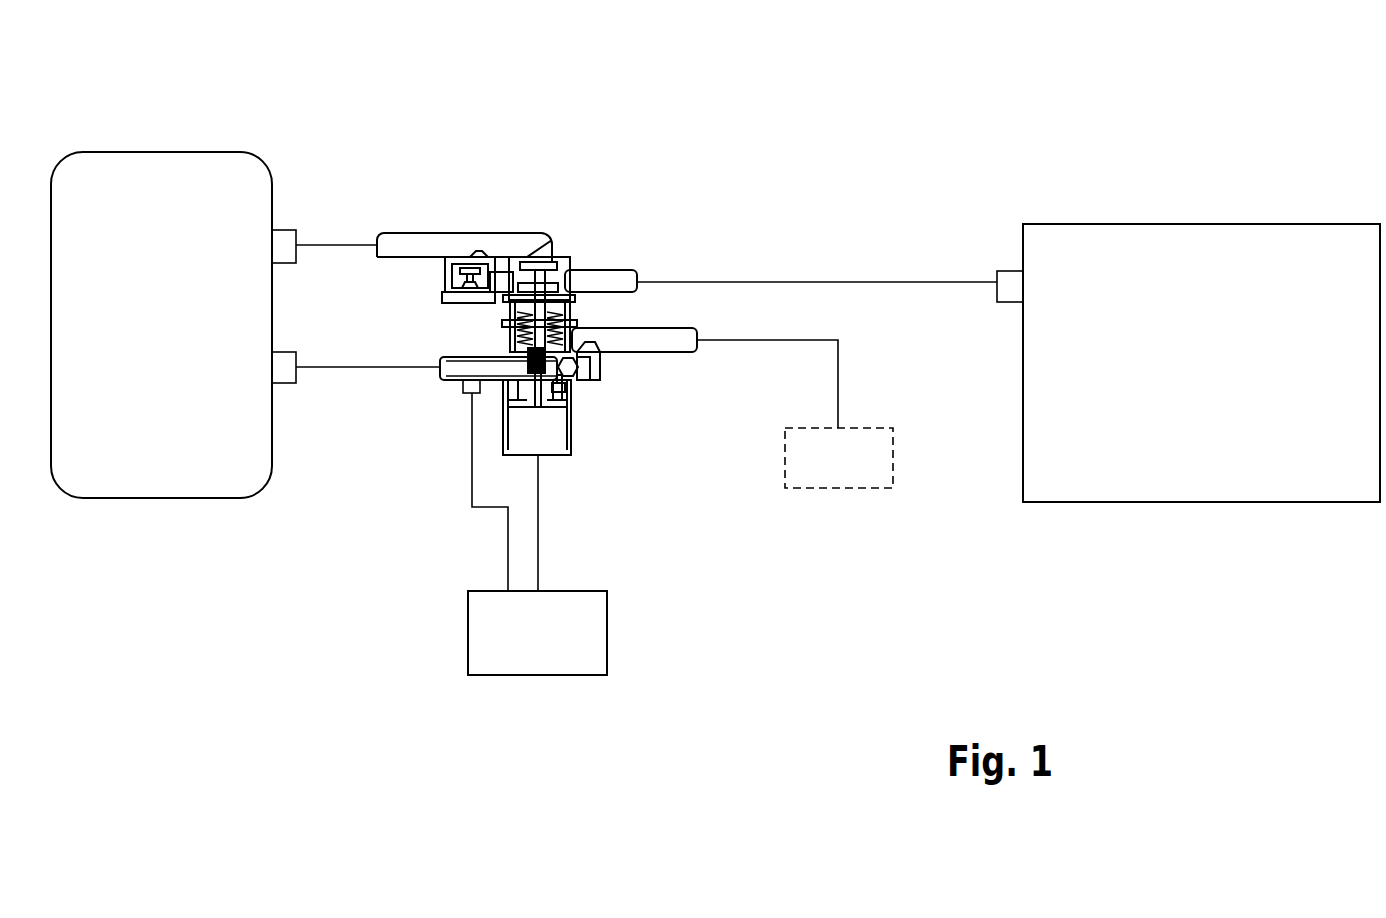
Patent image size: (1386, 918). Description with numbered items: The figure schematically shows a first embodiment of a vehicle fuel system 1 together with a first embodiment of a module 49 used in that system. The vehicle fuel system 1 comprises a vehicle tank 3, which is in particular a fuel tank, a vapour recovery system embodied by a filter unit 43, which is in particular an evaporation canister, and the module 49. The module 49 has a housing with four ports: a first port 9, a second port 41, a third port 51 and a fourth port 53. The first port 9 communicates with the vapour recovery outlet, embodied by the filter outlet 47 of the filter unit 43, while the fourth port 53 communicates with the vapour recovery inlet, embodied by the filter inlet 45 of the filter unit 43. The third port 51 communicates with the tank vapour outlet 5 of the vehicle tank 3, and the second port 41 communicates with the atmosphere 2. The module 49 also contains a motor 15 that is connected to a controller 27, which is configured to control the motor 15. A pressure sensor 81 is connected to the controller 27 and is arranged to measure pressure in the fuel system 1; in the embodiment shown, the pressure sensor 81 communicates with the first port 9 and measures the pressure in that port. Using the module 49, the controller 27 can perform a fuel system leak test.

The vehicle fuel system 1 is at (829, 197).
The atmosphere 2 is at (853, 452).
The vehicle tank 3 is at (1168, 317).
The tank vapour outlet 5 is at (1010, 282).
The first port 9 is at (442, 360).
The motor 15 is at (556, 442).
The controller 27 is at (563, 640).
The second port 41 is at (680, 343).
The filter unit 43 is at (203, 448).
The filter inlet 45 is at (285, 240).
The filter outlet 47 is at (285, 383).
The module 49 is at (540, 215).
The third port 51 is at (618, 270).
The fourth port 53 is at (410, 245).
The pressure sensor 81 is at (463, 387).